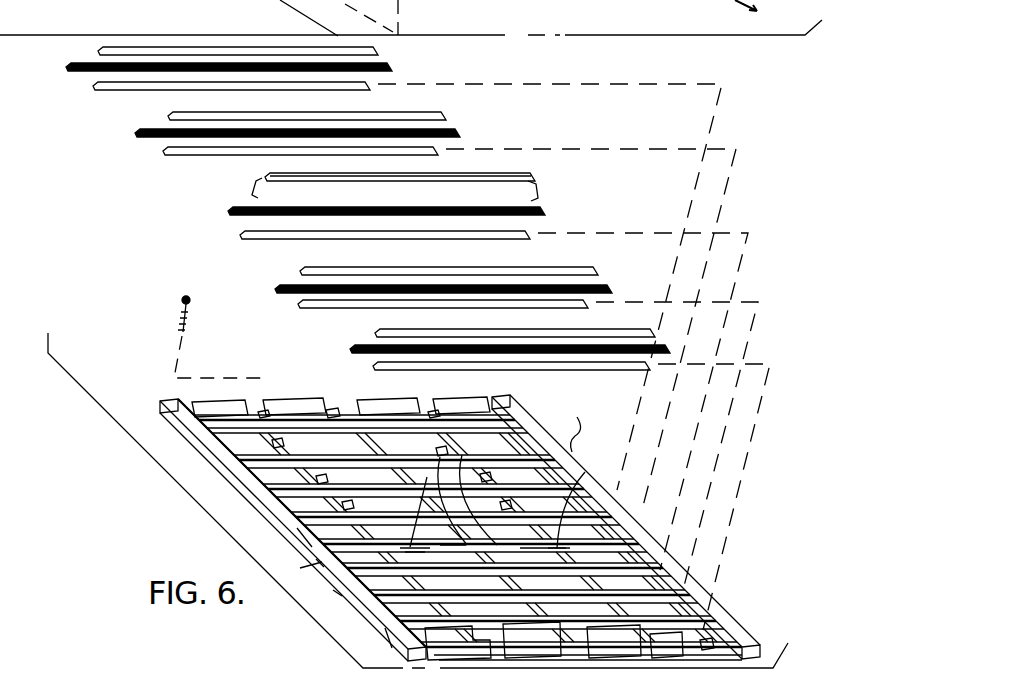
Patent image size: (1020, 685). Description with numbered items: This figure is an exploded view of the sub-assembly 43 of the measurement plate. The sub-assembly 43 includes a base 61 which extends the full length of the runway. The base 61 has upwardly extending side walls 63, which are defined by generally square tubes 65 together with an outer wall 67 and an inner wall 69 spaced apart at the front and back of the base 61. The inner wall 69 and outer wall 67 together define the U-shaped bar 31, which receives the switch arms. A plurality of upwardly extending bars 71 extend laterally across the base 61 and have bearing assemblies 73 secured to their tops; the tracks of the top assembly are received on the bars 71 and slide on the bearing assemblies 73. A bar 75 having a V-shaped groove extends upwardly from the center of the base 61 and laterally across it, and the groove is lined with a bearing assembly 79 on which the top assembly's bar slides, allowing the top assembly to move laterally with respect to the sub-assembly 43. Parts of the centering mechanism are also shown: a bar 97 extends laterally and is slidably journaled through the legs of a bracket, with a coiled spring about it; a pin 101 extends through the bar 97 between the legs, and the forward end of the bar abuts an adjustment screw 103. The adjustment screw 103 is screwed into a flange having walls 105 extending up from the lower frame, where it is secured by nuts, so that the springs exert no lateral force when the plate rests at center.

The sub-assembly 43 is at (106, 239).
The bearing assemblies 73 is at (348, 385).
The bearing assembly 79 is at (217, 172).
The base 61 is at (338, 447).
The side walls 63 is at (352, 618).
The square tubes 65 is at (756, 615).
The outer wall 67 is at (268, 396).
The inner wall 69 is at (276, 408).
The bars 71 is at (297, 528).
The bar 75 is at (333, 590).
The U-shaped bar 31 is at (328, 412).
The bar 97 is at (580, 499).
The pin 101 is at (568, 426).
The adjustment screw 103 is at (504, 492).
The walls 105 is at (418, 494).